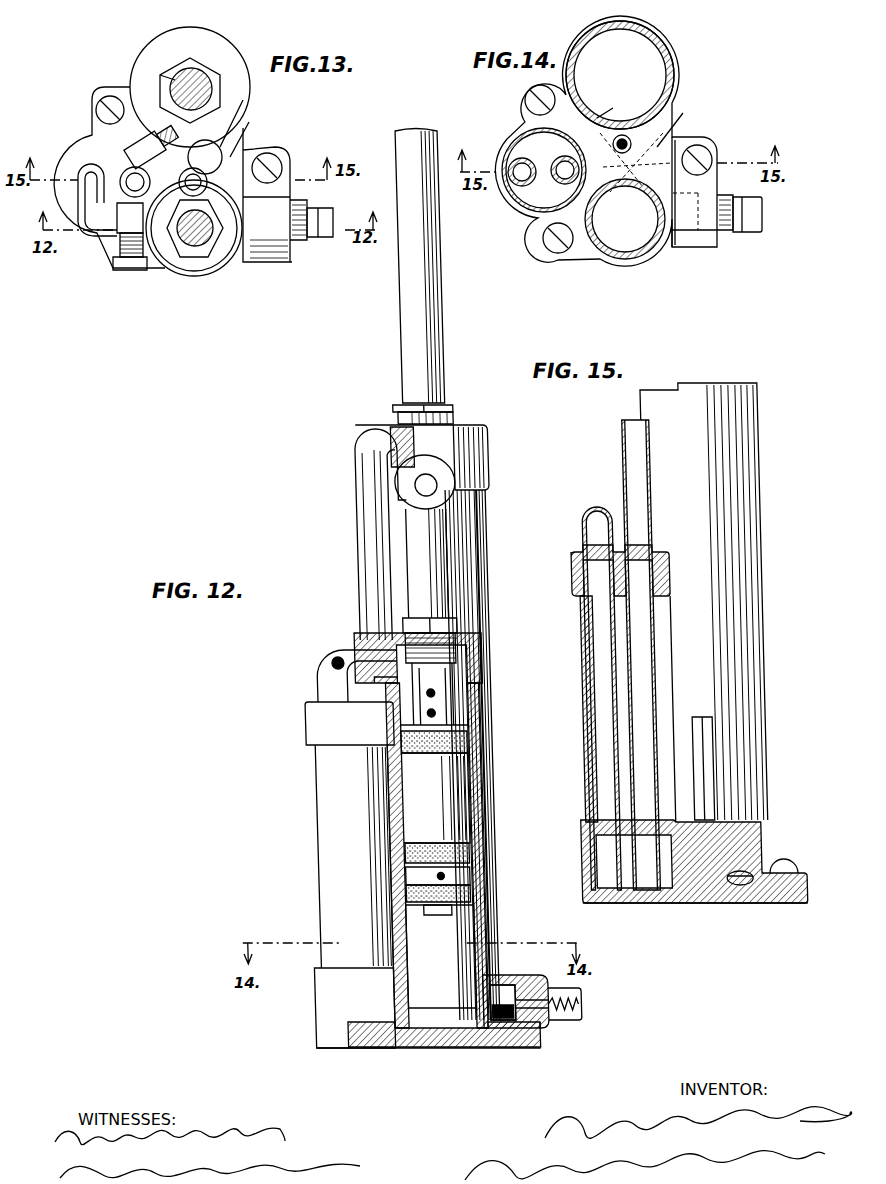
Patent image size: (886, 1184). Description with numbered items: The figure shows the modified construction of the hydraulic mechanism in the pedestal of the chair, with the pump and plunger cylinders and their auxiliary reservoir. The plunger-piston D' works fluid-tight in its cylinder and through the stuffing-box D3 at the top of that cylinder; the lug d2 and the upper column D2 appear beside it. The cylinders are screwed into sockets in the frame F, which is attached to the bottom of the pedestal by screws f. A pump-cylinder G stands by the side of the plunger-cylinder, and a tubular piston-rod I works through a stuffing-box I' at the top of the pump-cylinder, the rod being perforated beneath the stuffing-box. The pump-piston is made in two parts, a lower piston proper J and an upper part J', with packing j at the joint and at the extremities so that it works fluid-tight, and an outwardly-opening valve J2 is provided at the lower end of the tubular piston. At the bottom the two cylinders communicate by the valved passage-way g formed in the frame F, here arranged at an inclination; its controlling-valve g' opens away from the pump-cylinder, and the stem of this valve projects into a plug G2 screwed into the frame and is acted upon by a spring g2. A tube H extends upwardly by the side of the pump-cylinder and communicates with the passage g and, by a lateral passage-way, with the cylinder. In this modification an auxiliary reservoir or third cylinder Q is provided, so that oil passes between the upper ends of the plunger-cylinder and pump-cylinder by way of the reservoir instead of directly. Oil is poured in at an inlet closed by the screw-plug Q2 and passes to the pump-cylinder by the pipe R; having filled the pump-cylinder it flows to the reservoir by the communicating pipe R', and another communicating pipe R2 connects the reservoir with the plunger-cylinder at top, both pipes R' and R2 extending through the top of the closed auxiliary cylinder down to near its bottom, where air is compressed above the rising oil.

In FIG. 13, the stuffing-box D3 is at (200, 38).
In FIG. 12, the stuffing-box D3 is at (437, 457).
In FIG. 13, the plunger-piston D' is at (169, 76).
In FIG. 12, the plunger-piston D' is at (405, 266).
In FIG. 13, the rod lug d2 is at (170, 82).
In FIG. 12, the rod lug d2 is at (456, 410).
In FIG. 13, the screw-plug Q2 is at (210, 153).
In FIG. 12, the screw-plug Q2 is at (463, 418).
In FIG. 13, the frame F is at (245, 157).
In FIG. 14, the frame F is at (680, 140).
In FIG. 12, the frame F is at (370, 1035).
In FIG. 15, the frame F is at (708, 890).
In FIG. 13, the screws f is at (108, 100).
In FIG. 14, the screws f is at (720, 140).
In FIG. 15, the screws f is at (780, 866).
In FIG. 13, the communicating pipe R2 is at (137, 165).
In FIG. 14, the communicating pipe R2 is at (565, 180).
In FIG. 12, the communicating pipe R2 is at (372, 542).
In FIG. 15, the communicating pipe R2 is at (648, 475).
In FIG. 13, the communicating pipe R' is at (92, 215).
In FIG. 14, the communicating pipe R' is at (499, 156).
In FIG. 12, the communicating pipe R' is at (342, 676).
In FIG. 15, the communicating pipe R' is at (585, 698).
In FIG. 13, the pipe R is at (127, 256).
In FIG. 13, the tubular piston-rod I is at (194, 253).
In FIG. 12, the tubular piston-rod I is at (427, 563).
In FIG. 13, the stuffing-box I' is at (194, 238).
In FIG. 12, the stuffing-box I' is at (453, 640).
In FIG. 13, the plug G2 is at (312, 240).
In FIG. 14, the plug G2 is at (730, 233).
In FIG. 12, the plug G2 is at (541, 1025).
In FIG. 14, the pump-cylinder G is at (625, 219).
In FIG. 14, the column D2 is at (620, 75).
In FIG. 12, the column D2 is at (470, 562).
In FIG. 15, the column D2 is at (704, 601).
In FIG. 14, the valved passage-way g is at (647, 123).
In FIG. 12, the valved passage-way g is at (519, 1047).
In FIG. 15, the valved passage-way g is at (743, 896).
In FIG. 12, the controlling-valve g' is at (513, 978).
In FIG. 12, the spring g2 is at (574, 1004).
In FIG. 14, the tube H is at (644, 181).
In FIG. 15, the tube H is at (705, 765).
In FIG. 14, the auxiliary reservoir Q is at (532, 190).
In FIG. 12, the auxiliary reservoir Q is at (354, 875).
In FIG. 15, the auxiliary reservoir Q is at (584, 740).
In FIG. 12, the upper part of pump-piston J' is at (435, 787).
In FIG. 12, the packing j is at (462, 850).
In FIG. 12, the piston proper J is at (460, 884).
In FIG. 12, the outwardly-opening valve J2 is at (441, 956).